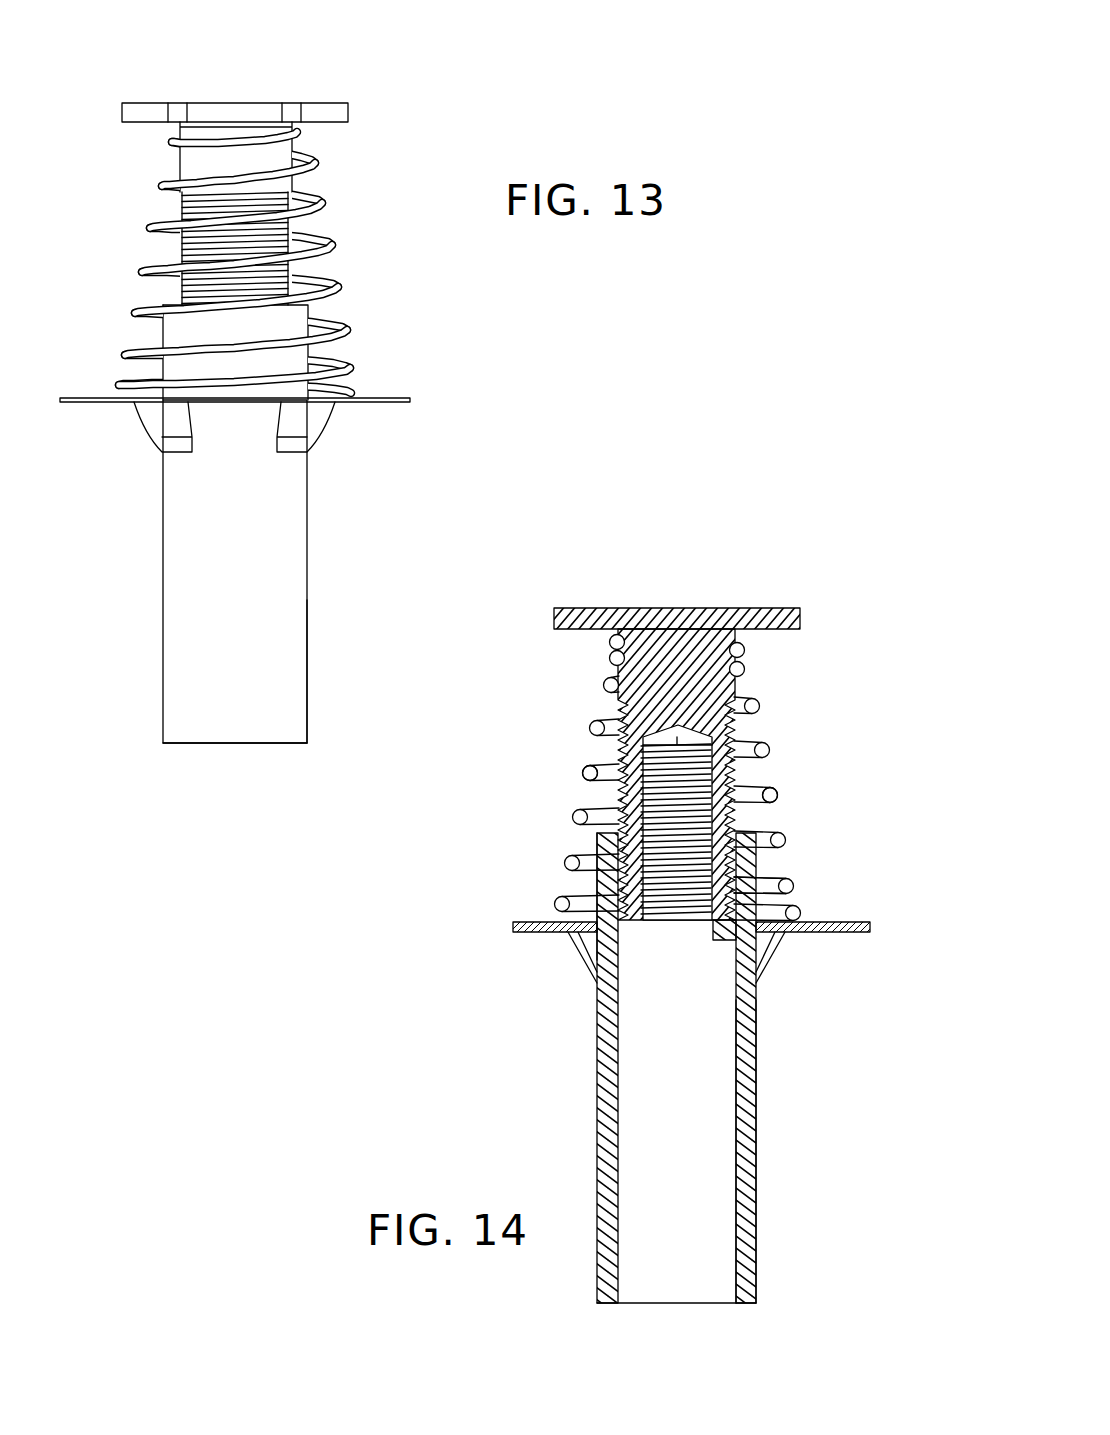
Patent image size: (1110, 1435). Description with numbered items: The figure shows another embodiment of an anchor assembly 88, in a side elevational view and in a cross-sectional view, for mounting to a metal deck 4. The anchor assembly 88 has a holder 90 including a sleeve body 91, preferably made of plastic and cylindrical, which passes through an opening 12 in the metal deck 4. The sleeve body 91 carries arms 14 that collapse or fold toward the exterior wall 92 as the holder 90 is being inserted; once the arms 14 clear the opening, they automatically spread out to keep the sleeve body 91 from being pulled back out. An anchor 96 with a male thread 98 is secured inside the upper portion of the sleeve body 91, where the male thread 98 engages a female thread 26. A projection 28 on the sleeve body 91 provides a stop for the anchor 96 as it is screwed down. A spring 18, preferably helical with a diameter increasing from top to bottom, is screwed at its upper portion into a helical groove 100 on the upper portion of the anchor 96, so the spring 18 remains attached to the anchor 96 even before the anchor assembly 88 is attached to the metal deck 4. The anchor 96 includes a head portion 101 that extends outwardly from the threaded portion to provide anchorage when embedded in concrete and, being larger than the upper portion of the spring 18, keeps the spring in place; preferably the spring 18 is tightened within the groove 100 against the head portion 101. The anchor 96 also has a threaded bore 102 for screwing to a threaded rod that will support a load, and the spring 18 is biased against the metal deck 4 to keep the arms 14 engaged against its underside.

In FIG. 13, the metal deck 4 is at (388, 400).
In FIG. 14, the metal deck 4 is at (852, 933).
In FIG. 14, the opening 12 is at (765, 872).
In FIG. 13, the arms 14 is at (160, 420).
In FIG. 14, the arms 14 is at (580, 945).
In FIG. 13, the spring 18 is at (160, 312).
In FIG. 14, the spring 18 is at (778, 795).
In FIG. 14, the female thread 26 is at (597, 870).
In FIG. 14, the projection 28 is at (718, 945).
In FIG. 13, the anchor assembly 88 is at (364, 298).
In FIG. 14, the anchor assembly 88 is at (785, 765).
In FIG. 13, the holder 90 is at (306, 572).
In FIG. 14, the holder 90 is at (598, 1073).
In FIG. 13, the sleeve body 91 is at (307, 665).
In FIG. 14, the sleeve body 91 is at (756, 1245).
In FIG. 13, the exterior wall 92 is at (195, 648).
In FIG. 14, the exterior wall 92 is at (756, 1140).
In FIG. 13, the anchor 96 is at (305, 196).
In FIG. 14, the anchor 96 is at (592, 700).
In FIG. 13, the male thread 98 is at (180, 257).
In FIG. 14, the male thread 98 is at (592, 788).
In FIG. 14, the helical groove 100 is at (630, 645).
In FIG. 13, the head portion 101 is at (319, 103).
In FIG. 14, the threaded bore 102 is at (700, 748).